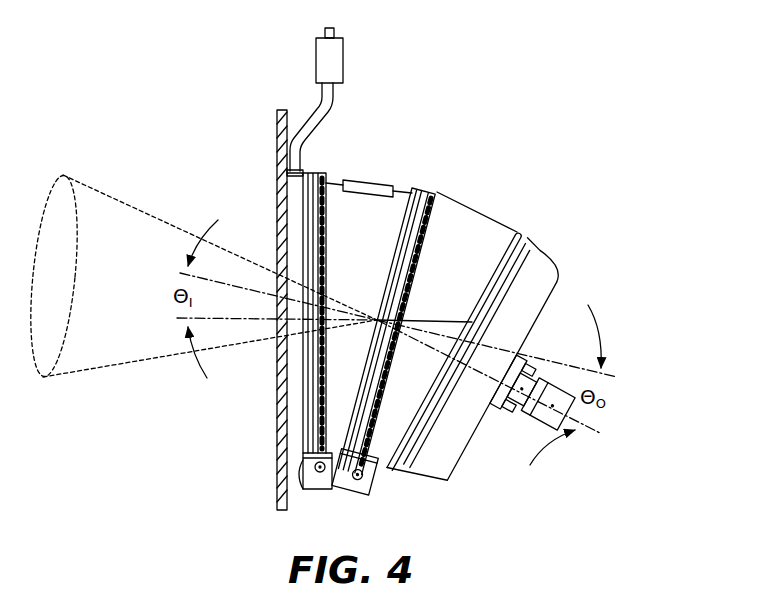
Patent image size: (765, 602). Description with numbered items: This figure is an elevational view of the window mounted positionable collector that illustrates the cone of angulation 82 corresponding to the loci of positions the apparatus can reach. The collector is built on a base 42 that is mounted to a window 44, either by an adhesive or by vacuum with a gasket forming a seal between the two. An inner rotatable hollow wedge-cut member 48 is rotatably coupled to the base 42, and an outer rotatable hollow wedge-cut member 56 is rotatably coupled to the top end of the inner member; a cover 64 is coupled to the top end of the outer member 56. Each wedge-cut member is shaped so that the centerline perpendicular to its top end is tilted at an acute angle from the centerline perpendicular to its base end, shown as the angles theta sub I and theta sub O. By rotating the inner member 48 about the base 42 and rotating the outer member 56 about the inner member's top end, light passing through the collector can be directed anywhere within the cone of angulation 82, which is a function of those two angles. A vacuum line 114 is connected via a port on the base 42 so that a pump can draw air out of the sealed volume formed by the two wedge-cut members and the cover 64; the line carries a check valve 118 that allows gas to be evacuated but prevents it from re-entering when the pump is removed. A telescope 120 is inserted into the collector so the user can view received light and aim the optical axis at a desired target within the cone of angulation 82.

The base 42 is at (292, 428).
The window 44 is at (279, 115).
The inner rotatable hollow wedge-cut member 48 is at (405, 187).
The outer rotatable hollow wedge-cut member 56 is at (479, 208).
The cover 64 is at (443, 457).
The cone of angulation 82 is at (118, 200).
The vacuum line 114 is at (312, 122).
The check valve 118 is at (343, 58).
The telescope 120 is at (527, 420).